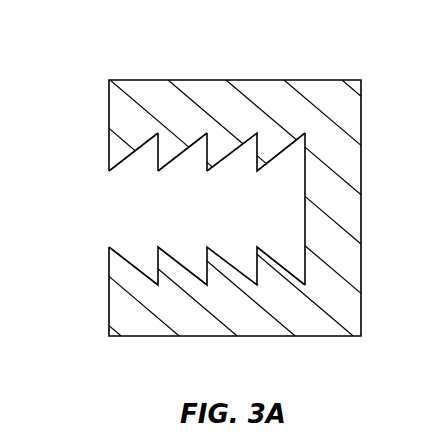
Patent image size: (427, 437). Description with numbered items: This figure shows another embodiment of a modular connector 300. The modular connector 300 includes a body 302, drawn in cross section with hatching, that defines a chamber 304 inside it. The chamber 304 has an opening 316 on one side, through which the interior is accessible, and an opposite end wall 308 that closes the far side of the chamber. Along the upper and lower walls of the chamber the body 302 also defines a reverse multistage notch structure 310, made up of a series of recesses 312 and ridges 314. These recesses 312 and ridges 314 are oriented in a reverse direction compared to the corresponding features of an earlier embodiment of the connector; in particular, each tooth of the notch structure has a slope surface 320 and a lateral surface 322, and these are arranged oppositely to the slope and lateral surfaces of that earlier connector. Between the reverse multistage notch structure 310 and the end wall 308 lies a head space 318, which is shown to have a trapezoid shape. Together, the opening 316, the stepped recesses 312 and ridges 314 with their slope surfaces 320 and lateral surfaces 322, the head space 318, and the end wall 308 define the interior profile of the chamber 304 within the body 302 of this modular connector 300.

The modular connector 300 is at (126, 59).
The body 302 is at (340, 193).
The chamber 304 is at (168, 232).
The end wall 308 is at (311, 238).
The reverse multistage notch structure 310 is at (197, 176).
The recesses 312 is at (187, 162).
The ridges 314 is at (211, 150).
The opening 316 is at (120, 205).
The head space 318 is at (292, 179).
The slope surface 320 is at (136, 153).
The lateral surface 322 is at (156, 152).